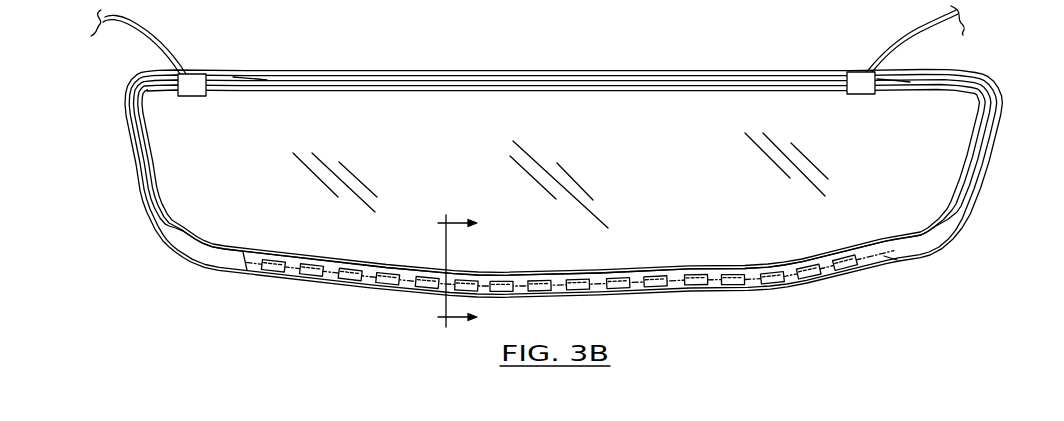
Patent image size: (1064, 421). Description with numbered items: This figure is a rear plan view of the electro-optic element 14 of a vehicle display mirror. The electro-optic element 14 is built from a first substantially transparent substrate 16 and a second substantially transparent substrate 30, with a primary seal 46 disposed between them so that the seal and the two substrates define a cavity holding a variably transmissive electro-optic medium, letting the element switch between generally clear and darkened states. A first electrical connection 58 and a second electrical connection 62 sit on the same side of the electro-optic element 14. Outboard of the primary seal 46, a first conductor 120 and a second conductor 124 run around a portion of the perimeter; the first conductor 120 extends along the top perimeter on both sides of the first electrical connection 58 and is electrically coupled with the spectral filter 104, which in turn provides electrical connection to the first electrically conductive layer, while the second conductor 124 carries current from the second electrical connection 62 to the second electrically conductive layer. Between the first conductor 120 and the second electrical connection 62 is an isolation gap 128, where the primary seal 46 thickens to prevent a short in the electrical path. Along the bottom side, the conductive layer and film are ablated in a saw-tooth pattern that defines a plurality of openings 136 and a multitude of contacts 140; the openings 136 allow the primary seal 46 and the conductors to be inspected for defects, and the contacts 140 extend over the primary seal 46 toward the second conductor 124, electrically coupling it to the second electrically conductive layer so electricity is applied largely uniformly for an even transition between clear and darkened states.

The electro-optic element 14 is at (547, 178).
The first substantially transparent substrate 16 is at (548, 160).
The second substantially transparent substrate 30 is at (903, 227).
The primary seal 46 is at (495, 80).
The first electrical connection 58 is at (858, 72).
The second electrical connection 62 is at (196, 84).
The spectral filter 104 is at (157, 203).
The first conductor 120 is at (638, 75).
The second conductor 124 is at (137, 153).
The isolation gap 128 is at (222, 65).
The openings 136 is at (857, 276).
The contacts 140 is at (568, 301).